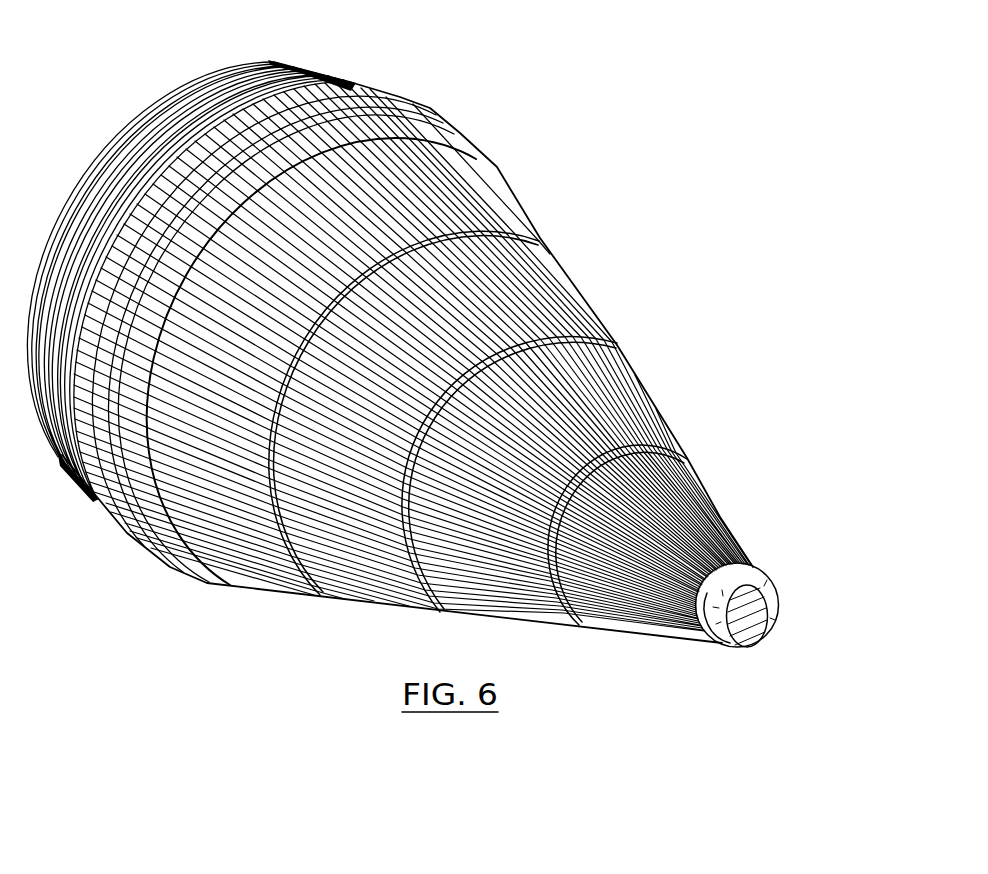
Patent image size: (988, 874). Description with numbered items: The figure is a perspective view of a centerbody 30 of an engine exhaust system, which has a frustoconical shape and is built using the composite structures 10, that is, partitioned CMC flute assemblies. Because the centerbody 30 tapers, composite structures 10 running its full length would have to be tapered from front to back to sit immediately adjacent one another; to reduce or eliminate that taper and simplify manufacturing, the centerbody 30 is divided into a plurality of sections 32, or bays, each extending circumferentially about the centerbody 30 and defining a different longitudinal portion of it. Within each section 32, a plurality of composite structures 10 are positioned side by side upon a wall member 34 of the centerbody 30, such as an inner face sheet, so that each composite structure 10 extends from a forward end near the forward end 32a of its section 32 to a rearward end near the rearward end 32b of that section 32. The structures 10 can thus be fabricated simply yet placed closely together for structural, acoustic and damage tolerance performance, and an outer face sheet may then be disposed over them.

The composite structure 10 is at (561, 275).
The centerbody 30 is at (546, 74).
The section 32 is at (497, 163).
The forward end of section 32a is at (537, 230).
The rearward end of section 32b is at (590, 323).
The wall member 34 is at (312, 62).